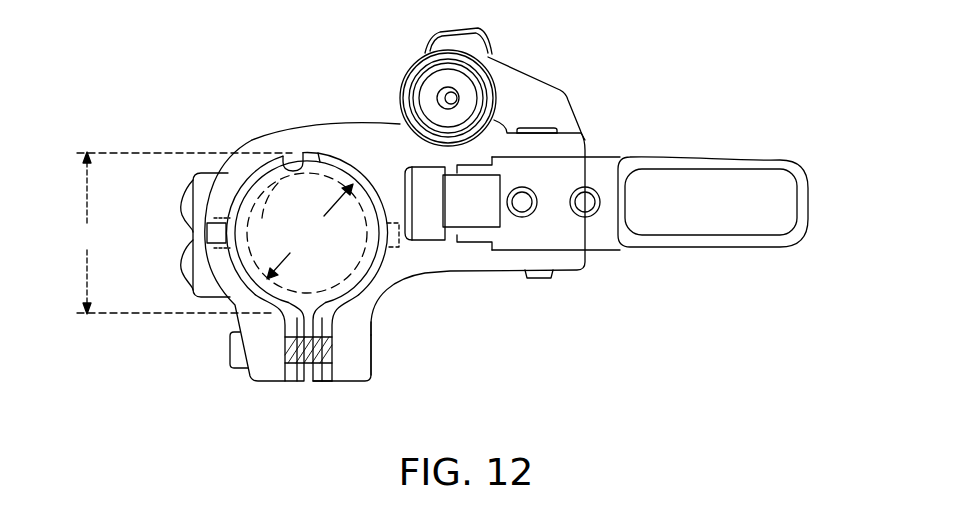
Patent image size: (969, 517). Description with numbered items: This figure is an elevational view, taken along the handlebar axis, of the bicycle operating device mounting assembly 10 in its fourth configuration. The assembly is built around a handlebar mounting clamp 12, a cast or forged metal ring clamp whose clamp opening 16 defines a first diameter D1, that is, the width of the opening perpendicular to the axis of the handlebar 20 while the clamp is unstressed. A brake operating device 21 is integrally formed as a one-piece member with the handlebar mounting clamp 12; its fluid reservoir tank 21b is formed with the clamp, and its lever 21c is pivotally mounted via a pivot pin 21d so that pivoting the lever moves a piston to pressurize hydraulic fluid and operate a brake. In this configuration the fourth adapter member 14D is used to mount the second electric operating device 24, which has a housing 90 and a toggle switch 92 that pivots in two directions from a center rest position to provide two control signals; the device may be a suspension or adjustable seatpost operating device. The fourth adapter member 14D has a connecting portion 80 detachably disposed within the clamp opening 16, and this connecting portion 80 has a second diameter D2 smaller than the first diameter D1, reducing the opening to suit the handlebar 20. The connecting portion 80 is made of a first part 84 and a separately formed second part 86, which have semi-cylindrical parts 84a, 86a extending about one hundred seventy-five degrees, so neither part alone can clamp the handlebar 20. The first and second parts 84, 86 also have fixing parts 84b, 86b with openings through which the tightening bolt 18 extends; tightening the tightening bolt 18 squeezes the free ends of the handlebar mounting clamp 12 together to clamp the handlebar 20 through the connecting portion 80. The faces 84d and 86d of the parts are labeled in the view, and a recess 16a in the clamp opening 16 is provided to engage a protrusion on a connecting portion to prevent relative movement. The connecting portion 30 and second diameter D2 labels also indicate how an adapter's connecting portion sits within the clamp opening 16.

The bicycle operating device mounting assembly 10 is at (704, 40).
The handlebar mounting clamp 12 is at (246, 146).
The fourth adapter member 14D is at (248, 312).
The clamp opening 16 is at (284, 162).
The recess 16a is at (383, 173).
The tightening bolt 18 is at (231, 346).
The handlebar 20 is at (365, 302).
The brake operating device 21 is at (567, 285).
The fluid reservoir tank 21b is at (511, 79).
The lever 21c is at (738, 158).
The pivot pin 21d is at (545, 125).
The second electric operating device 24 is at (186, 182).
The connecting portion 30 is at (336, 160).
The connecting portion 80 is at (393, 56).
The first part 84 is at (270, 162).
The semi-cylindrical part 84a is at (274, 303).
The fixing part 84b is at (296, 383).
The inner surface 84d is at (254, 202).
The second part 86 is at (361, 158).
The semi-cylindrical part 86a is at (362, 300).
The fixing part 86b is at (321, 384).
The outer clamp block 86d is at (397, 257).
The housing 90 is at (190, 284).
The toggle switch 92 is at (206, 230).
The first diameter D1 is at (182, 233).
The second diameter D2 is at (310, 231).